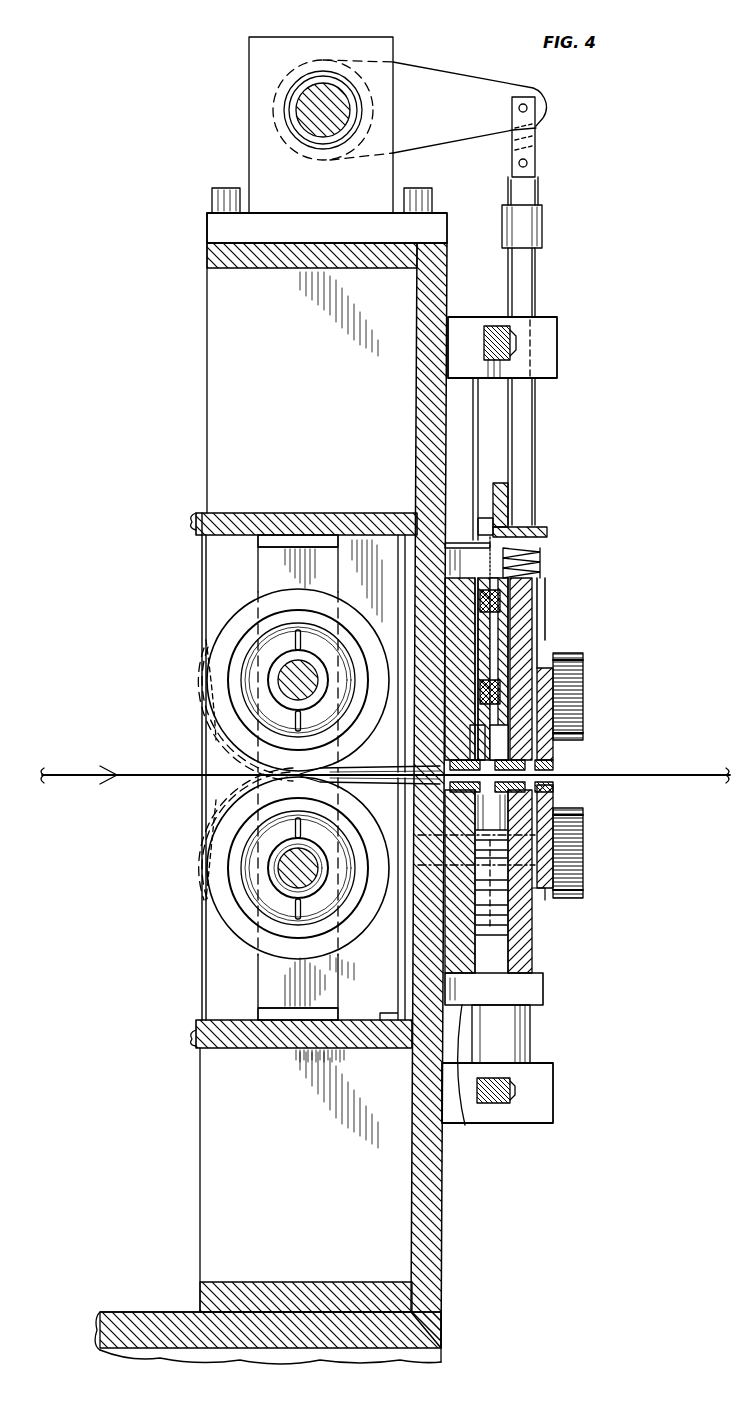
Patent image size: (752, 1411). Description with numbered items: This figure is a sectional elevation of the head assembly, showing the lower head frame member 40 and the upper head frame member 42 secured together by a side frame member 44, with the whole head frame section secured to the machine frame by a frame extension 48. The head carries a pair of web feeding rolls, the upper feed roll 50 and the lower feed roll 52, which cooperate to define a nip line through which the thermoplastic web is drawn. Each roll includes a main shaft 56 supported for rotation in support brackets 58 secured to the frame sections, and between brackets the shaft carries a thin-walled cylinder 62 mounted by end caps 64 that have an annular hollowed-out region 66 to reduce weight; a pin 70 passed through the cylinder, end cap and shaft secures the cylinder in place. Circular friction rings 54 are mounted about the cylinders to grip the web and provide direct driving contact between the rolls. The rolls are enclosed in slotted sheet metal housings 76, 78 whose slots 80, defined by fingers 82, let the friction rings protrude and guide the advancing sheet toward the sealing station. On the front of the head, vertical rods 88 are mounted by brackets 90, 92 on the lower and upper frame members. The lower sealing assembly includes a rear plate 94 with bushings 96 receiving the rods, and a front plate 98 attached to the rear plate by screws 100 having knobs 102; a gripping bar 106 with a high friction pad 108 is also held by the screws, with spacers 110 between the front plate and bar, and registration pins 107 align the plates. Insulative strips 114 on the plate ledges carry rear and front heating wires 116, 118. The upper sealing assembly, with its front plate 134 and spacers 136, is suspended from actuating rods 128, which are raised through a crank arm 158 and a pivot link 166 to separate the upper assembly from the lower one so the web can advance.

The lower head frame member 40 is at (180, 1161).
The upper head frame member 42 is at (180, 363).
The side frame member 44 is at (215, 410).
The frame extension 48 is at (135, 1312).
The upper feed roll 50 is at (212, 630).
The lower feed roll 52 is at (222, 957).
The friction ring 54 is at (222, 690).
The main shaft 56 is at (282, 668).
The support bracket 58 is at (272, 562).
The thin-walled cylinder 62 is at (255, 960).
The end cap 64 is at (272, 1012).
The annular hollowed-out region 66 is at (252, 870).
The pin 70 is at (268, 733).
The upper slotted sheet metal housing 76 is at (200, 545).
The lower slotted sheet metal housing 78 is at (198, 921).
The slot 80 is at (205, 652).
The finger 82 is at (378, 768).
The vertical rod 88 is at (517, 1035).
The lower bracket 90 is at (545, 1095).
The upper bracket 92 is at (558, 330).
The rear plate 94 is at (465, 1125).
The bushing 96 is at (535, 968).
The front plate 98 is at (520, 930).
The screw 100 is at (520, 917).
The knob 102 is at (573, 852).
The gripping bar 106 is at (545, 820).
The registration pin 107 is at (495, 935).
The high friction pad 108 is at (485, 790).
The spacer 110 is at (535, 888).
The insulative strip 114 is at (548, 795).
The rear heating wire 116 is at (520, 778).
The front heating wire 118 is at (545, 782).
The actuating rod 128 is at (536, 412).
The front plate 134 is at (520, 660).
The spacer 136 is at (498, 632).
The crank arm 158 is at (458, 84).
The pivot link 166 is at (538, 134).